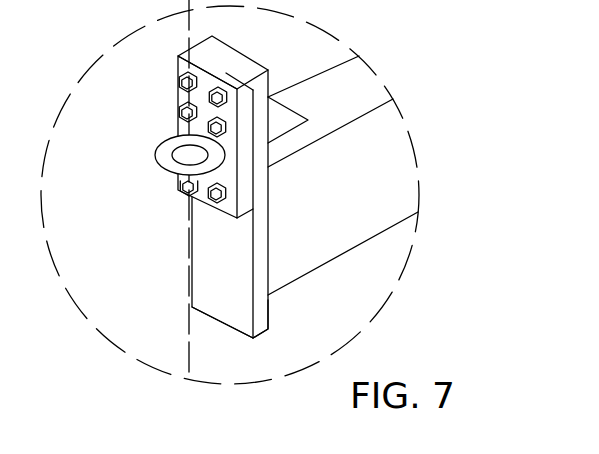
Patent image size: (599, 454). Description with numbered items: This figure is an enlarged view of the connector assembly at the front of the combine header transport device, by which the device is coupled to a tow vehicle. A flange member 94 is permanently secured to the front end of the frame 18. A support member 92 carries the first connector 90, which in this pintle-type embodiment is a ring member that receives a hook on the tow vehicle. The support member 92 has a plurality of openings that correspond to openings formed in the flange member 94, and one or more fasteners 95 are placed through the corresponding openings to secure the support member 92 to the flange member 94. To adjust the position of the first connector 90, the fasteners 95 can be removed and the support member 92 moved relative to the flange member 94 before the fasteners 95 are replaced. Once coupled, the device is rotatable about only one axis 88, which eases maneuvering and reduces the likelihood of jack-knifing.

The frame 18 is at (303, 290).
The axis 88 is at (188, 332).
The first connector 90 is at (157, 155).
The support member 92 is at (177, 65).
The flange member 94 is at (268, 318).
The fasteners 95 is at (185, 114).